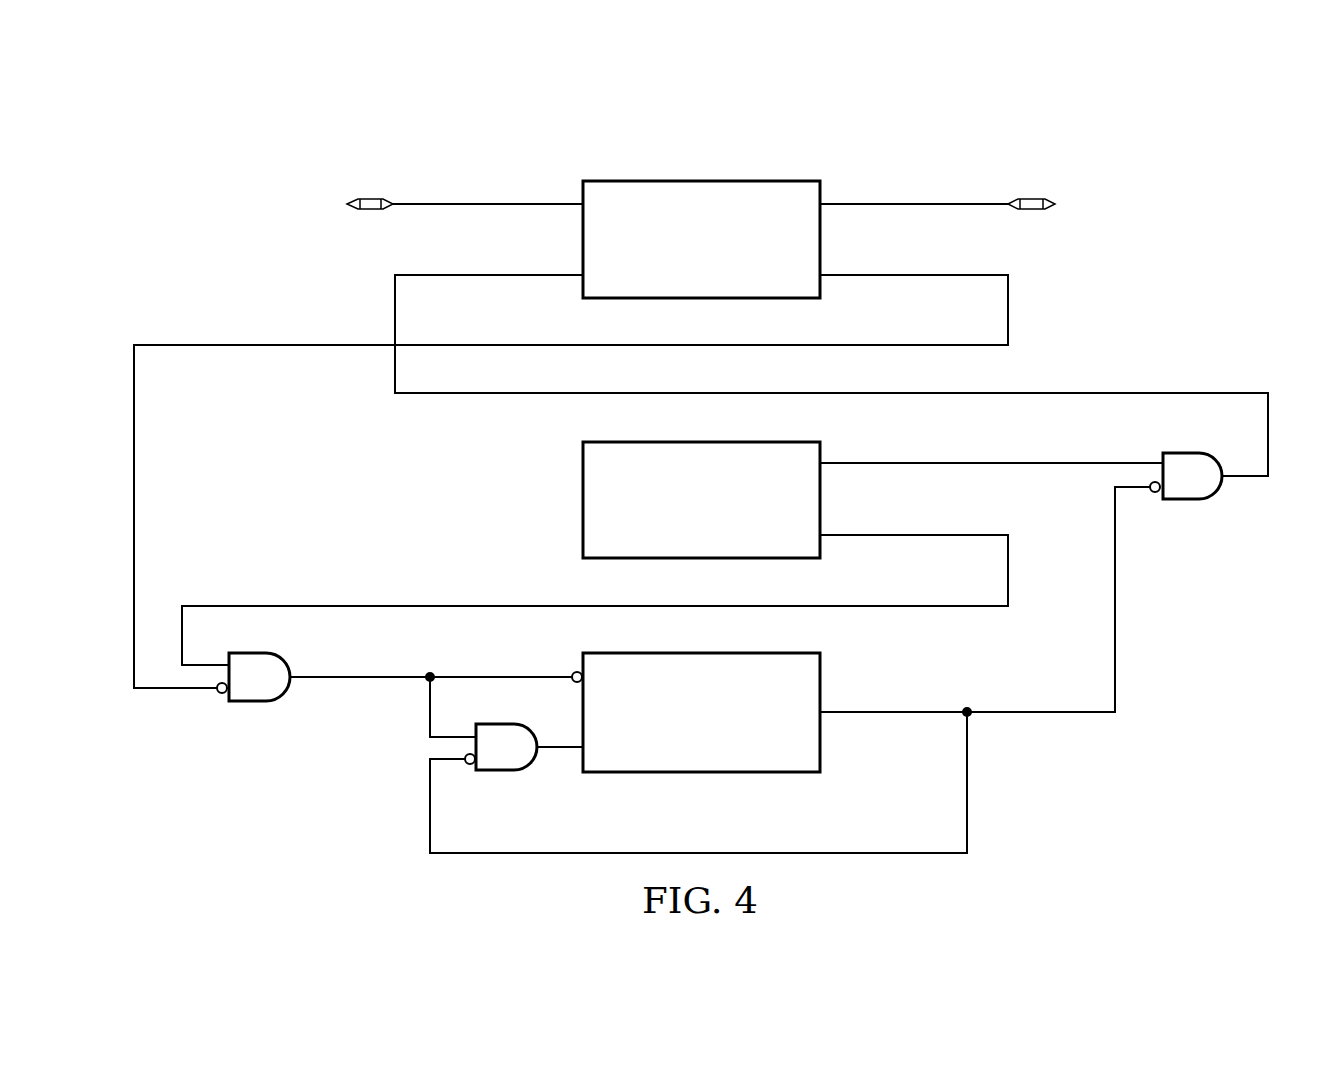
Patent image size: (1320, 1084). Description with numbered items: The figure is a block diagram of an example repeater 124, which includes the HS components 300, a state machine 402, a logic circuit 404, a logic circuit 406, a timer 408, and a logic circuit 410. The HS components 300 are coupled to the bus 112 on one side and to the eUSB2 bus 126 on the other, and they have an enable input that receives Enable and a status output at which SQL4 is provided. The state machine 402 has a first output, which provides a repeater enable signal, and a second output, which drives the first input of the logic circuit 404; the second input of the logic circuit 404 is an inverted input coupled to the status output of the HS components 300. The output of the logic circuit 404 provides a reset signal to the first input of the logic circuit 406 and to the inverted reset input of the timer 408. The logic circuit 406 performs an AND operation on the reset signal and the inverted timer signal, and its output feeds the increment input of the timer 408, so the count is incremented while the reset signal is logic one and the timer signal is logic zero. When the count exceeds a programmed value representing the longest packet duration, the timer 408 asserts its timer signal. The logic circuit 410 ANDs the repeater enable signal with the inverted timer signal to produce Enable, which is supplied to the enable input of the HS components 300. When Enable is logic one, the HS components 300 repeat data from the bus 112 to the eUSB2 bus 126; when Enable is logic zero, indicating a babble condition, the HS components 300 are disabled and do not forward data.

The repeater 124 is at (502, 150).
The bus 112 is at (370, 212).
The eUSB2 bus 126 is at (1030, 210).
The HS components 300 is at (678, 275).
The state machine 402 is at (678, 535).
The logic circuit 404 is at (257, 703).
The logic circuit 406 is at (507, 773).
The timer 408 is at (678, 747).
The logic circuit 410 is at (1192, 502).